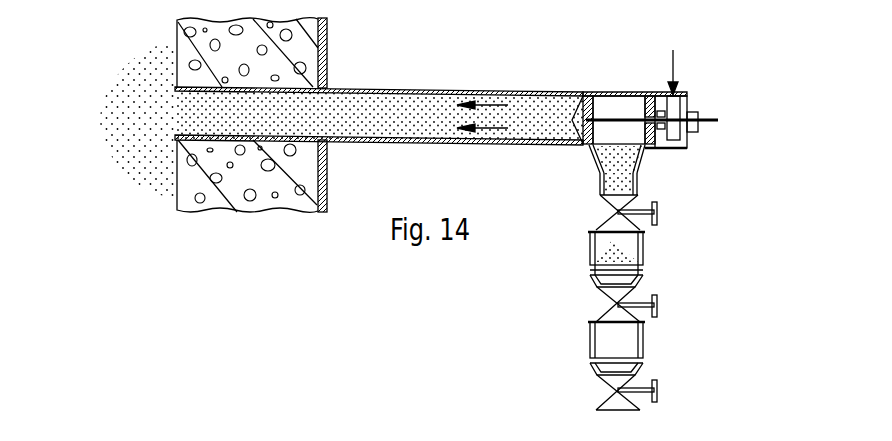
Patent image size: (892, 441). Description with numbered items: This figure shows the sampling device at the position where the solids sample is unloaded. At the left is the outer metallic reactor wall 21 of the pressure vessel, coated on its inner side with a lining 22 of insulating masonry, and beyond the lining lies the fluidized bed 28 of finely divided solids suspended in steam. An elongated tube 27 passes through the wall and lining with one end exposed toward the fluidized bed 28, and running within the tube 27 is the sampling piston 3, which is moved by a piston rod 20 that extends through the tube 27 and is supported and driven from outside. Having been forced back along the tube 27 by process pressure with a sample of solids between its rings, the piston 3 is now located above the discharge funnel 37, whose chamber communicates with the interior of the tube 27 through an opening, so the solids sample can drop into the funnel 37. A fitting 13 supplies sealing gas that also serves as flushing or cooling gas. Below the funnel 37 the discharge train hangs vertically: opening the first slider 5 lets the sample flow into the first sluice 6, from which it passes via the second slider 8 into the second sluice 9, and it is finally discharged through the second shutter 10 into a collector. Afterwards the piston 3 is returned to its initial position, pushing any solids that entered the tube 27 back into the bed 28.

The reactor wall 21 is at (325, 32).
The lining 22 is at (312, 60).
The fluidized bed 28 is at (153, 125).
The tube 27 is at (423, 88).
The sampling piston 3 is at (613, 115).
The fitting 13 is at (673, 60).
The piston rod 20 is at (712, 118).
The discharge funnel 37 is at (647, 155).
The first slider 5 is at (608, 200).
The first sluice 6 is at (645, 248).
The second slider 8 is at (612, 312).
The second sluice 9 is at (645, 343).
The second shutter 10 is at (612, 398).